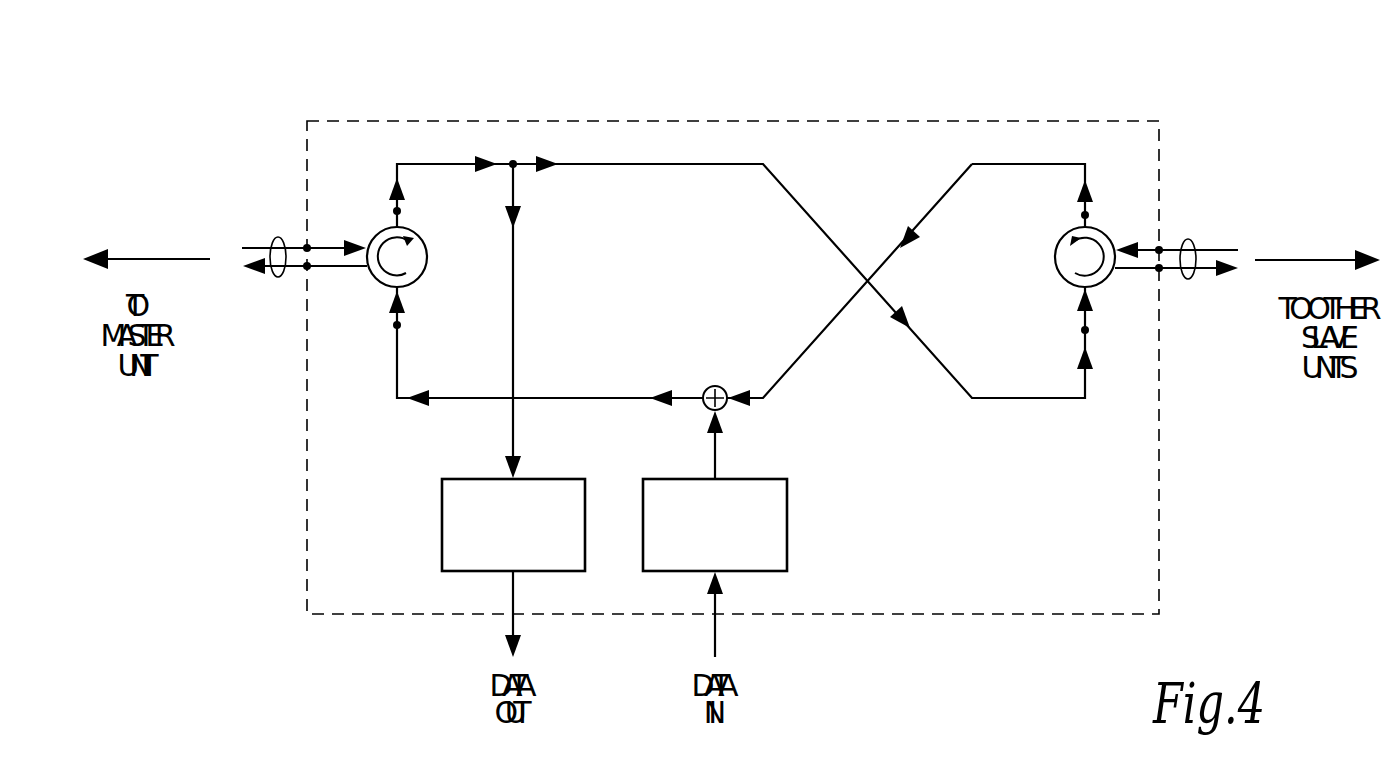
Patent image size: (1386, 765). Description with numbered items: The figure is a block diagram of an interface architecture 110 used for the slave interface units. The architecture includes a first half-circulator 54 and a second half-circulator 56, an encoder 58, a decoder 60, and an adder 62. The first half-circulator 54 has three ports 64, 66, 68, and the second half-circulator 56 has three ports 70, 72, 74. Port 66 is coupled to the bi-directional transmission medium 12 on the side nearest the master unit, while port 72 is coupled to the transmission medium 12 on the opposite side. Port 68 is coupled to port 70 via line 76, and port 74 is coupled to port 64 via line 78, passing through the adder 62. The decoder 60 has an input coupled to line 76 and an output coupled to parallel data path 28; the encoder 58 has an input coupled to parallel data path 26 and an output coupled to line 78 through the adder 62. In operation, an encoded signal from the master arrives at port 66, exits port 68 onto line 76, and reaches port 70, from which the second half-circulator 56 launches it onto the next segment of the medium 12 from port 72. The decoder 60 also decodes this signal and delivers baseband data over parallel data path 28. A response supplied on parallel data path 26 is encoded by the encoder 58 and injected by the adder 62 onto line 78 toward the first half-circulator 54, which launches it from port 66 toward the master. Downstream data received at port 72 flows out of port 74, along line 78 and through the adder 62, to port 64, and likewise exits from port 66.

The interface architecture 110 is at (338, 121).
The line 76 is at (669, 164).
The line 78 is at (944, 195).
The bi-directional transmission medium 12 is at (278, 238).
The first half-circulator 54 is at (418, 279).
The second half-circulator 56 is at (1055, 262).
The port 68 is at (397, 211).
The port 64 is at (397, 325).
The port 66 is at (307, 268).
The port 74 is at (1085, 215).
The port 70 is at (1085, 330).
The port 72 is at (1159, 268).
The decoder 60 is at (441, 479).
The encoder 58 is at (643, 479).
The adder 62 is at (710, 387).
The parallel data path 28 is at (513, 630).
The parallel data path 26 is at (715, 640).